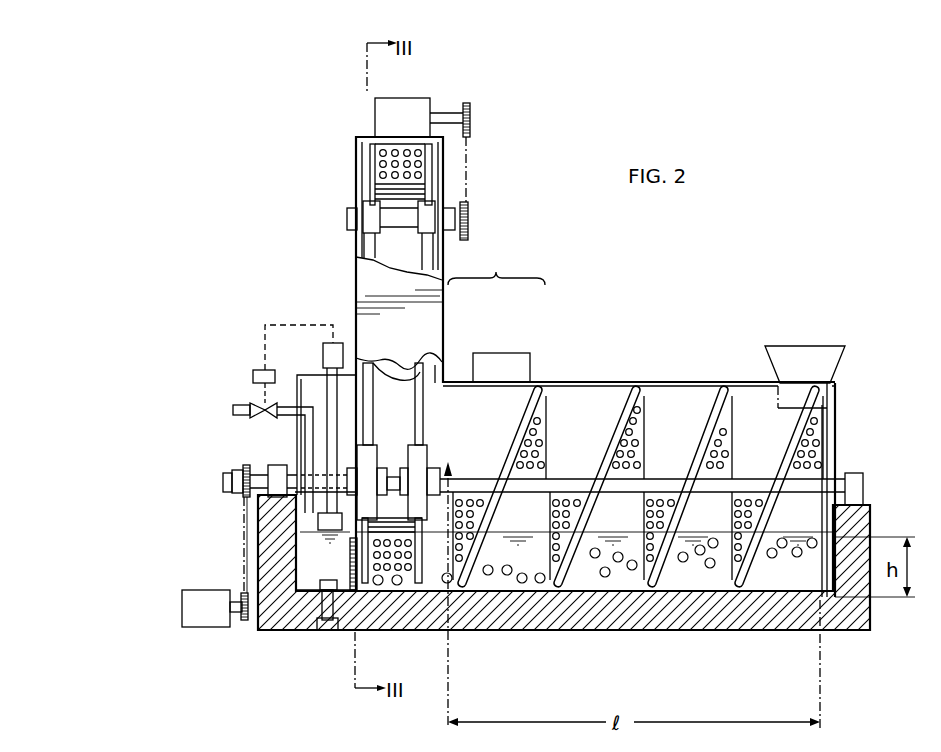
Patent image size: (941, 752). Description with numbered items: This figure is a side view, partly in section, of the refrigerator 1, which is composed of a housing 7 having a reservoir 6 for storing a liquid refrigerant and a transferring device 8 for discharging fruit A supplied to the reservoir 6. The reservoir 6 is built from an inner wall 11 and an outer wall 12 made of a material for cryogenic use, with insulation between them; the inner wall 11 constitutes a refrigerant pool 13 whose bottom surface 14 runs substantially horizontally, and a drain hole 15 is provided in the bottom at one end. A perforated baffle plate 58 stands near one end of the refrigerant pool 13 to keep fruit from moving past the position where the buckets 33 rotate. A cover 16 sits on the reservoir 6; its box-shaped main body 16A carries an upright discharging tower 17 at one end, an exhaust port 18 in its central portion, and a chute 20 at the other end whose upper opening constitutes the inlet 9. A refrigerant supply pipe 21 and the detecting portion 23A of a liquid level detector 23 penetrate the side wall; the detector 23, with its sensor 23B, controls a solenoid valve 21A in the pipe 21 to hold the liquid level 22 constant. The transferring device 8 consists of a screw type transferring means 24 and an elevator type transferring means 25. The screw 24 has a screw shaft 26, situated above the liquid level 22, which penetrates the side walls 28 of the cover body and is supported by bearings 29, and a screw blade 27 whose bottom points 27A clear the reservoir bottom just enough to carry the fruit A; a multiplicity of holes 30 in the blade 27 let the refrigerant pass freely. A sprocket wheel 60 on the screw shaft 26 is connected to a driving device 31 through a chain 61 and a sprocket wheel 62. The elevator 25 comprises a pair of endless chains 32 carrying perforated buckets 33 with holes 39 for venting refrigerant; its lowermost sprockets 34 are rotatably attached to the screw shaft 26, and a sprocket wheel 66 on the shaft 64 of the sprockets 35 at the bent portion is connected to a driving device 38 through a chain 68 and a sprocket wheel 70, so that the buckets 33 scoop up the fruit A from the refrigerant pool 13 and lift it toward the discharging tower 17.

The refrigerator 1 is at (296, 226).
The reservoir 6 is at (548, 622).
The housing 7 is at (509, 648).
The transferring device 8 is at (496, 270).
The inlet 9 is at (803, 347).
The inner wall 11 is at (602, 598).
The outer wall 12 is at (638, 630).
The refrigerant pool 13 is at (787, 595).
The bottom surface 14 is at (722, 595).
The drain hole 15 is at (322, 627).
The cover 16 is at (641, 374).
The main body of the cover 16A is at (712, 381).
The discharging tower 17 is at (356, 275).
The exhaust port 18 is at (535, 365).
The chute 20 is at (784, 365).
The refrigerant supply pipe 21 is at (308, 435).
The solenoid valve 21A is at (253, 376).
The liquid level 22 is at (501, 530).
The liquid level detector 23 is at (333, 355).
The detecting portion 23A is at (313, 410).
The sensor 23B is at (326, 541).
The screw type transferring means 24 is at (642, 508).
The elevator type transferring means 25 is at (434, 380).
The screw shaft 26 is at (470, 483).
The screw blade 27 is at (548, 424).
The bottom points of the blade 27A is at (543, 577).
The side walls 28 is at (297, 455).
The bearings 29 is at (243, 497).
The holes 30 is at (643, 437).
The driving device 31 is at (205, 627).
The endless chains 32 is at (373, 378).
The buckets 33 is at (430, 158).
The lowermost sprockets 34 is at (367, 470).
The sprockets at the bent portion 35 is at (368, 213).
The driving device 38 is at (418, 104).
The holes 39 is at (377, 158).
The baffle plate 58 is at (244, 557).
The sprocket wheel 60 is at (226, 478).
The chain 61 is at (244, 540).
The sprocket wheel 62 is at (245, 622).
The shaft 64 is at (398, 222).
The sprocket wheel 66 is at (470, 221).
The chain 68 is at (470, 172).
The sprocket wheel 70 is at (472, 113).
The fruit A is at (828, 594).